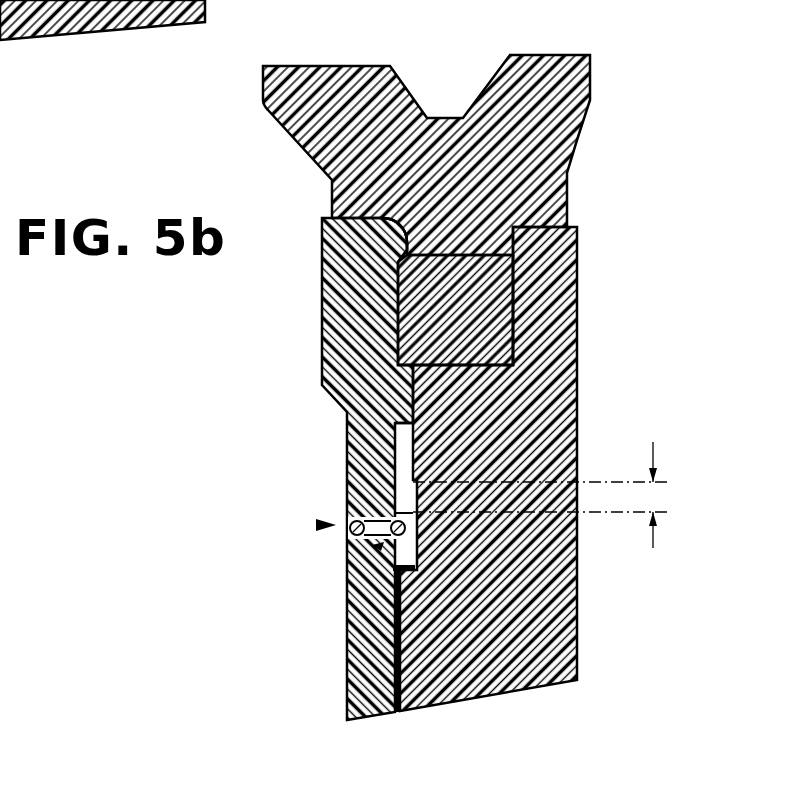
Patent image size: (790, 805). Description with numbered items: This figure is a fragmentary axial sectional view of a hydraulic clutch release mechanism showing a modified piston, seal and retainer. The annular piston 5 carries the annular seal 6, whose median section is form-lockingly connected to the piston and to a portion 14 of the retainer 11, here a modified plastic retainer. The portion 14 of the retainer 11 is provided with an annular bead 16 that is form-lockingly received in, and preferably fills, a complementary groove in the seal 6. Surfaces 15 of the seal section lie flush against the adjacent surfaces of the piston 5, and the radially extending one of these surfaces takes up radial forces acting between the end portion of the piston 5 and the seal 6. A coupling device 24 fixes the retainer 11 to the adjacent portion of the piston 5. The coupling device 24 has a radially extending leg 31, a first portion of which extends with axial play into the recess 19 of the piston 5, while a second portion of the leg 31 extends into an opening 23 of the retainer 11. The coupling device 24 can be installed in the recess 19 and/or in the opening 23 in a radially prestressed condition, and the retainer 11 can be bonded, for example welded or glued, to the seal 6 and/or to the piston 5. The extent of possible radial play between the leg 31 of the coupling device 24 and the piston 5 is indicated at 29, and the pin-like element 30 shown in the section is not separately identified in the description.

The piston 5 is at (567, 421).
The seal 6 is at (561, 62).
The retainer 11 is at (355, 622).
The portion of the retainer 14 is at (425, 256).
The surfaces of the seal section 15 is at (497, 371).
The annular bead 16 is at (422, 216).
The recess 19 is at (407, 554).
The opening 23 is at (378, 547).
The coupling device 24 is at (318, 524).
The radial play 29 is at (653, 497).
The pin 30 is at (355, 531).
The leg 31 is at (393, 517).